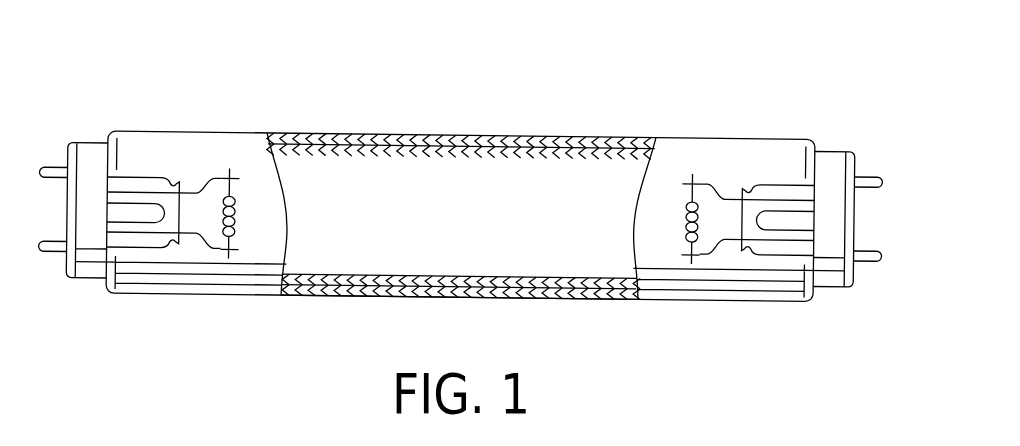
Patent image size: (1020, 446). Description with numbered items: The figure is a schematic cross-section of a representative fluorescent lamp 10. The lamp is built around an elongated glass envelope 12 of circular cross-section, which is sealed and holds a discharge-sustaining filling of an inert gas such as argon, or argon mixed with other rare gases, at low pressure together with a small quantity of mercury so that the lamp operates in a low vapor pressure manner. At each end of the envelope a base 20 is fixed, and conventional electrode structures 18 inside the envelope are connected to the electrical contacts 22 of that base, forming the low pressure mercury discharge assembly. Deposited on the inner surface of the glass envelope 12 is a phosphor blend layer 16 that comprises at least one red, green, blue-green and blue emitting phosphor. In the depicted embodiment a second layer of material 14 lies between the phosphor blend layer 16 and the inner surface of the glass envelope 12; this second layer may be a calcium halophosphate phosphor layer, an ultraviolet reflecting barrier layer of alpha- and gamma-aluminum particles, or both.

The fluorescent lamp 10 is at (270, 80).
The glass envelope 12 is at (408, 142).
The second layer of material 14 is at (508, 143).
The phosphor blend layer 16 is at (635, 148).
The electrode structures 18 is at (232, 237).
The base 20 is at (88, 268).
The electrical contacts 22 is at (50, 146).